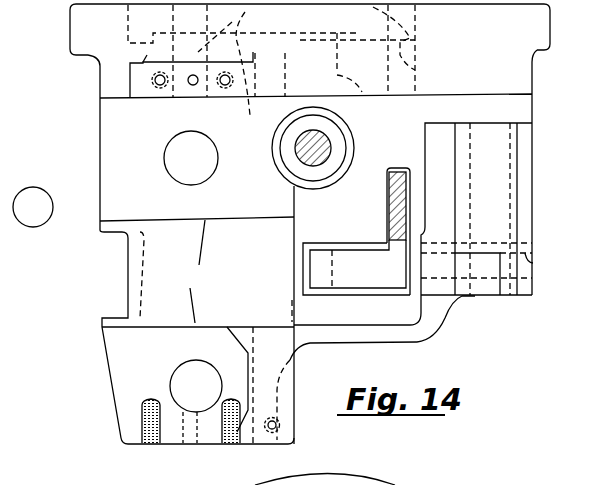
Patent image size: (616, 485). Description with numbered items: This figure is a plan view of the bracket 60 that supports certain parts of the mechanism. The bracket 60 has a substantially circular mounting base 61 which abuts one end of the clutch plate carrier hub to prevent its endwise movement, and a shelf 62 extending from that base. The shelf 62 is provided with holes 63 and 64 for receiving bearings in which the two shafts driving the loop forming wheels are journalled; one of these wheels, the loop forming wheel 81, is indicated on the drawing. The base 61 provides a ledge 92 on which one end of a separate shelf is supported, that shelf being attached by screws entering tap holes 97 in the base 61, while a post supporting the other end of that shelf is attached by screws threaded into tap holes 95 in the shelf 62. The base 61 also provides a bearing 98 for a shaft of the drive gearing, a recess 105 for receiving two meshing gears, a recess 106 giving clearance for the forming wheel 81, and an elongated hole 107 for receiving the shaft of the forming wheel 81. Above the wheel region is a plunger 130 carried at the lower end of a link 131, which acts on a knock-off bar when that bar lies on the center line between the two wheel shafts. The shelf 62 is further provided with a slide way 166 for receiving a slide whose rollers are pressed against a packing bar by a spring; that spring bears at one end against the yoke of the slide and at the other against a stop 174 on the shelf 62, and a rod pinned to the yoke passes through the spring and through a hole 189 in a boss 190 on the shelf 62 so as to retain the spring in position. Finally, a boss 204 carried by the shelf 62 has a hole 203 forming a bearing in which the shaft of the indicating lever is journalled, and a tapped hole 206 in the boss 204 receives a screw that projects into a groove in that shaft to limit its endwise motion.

The bracket 60 is at (33, 207).
The mounting base 61 is at (78, 24).
The shelf 62 is at (100, 133).
The hole 63 is at (177, 150).
The hole 64 is at (183, 382).
The loop forming wheel 81 is at (325, 143).
The ledge 92 is at (138, 71).
The tap holes 95 is at (156, 446).
The tap holes 97 is at (224, 86).
The bearing 98 is at (320, 143).
The recess 105 is at (128, 43).
The recess 106 is at (428, 72).
The elongated hole 107 is at (320, 188).
The plunger 130 is at (318, 295).
The link 131 is at (397, 178).
The slide way 166 is at (196, 271).
The stop 174 is at (420, 293).
The hole 189 is at (533, 263).
The boss 190 is at (518, 198).
The hole 203 is at (290, 434).
The boss 204 is at (242, 332).
The hole 206 is at (278, 425).